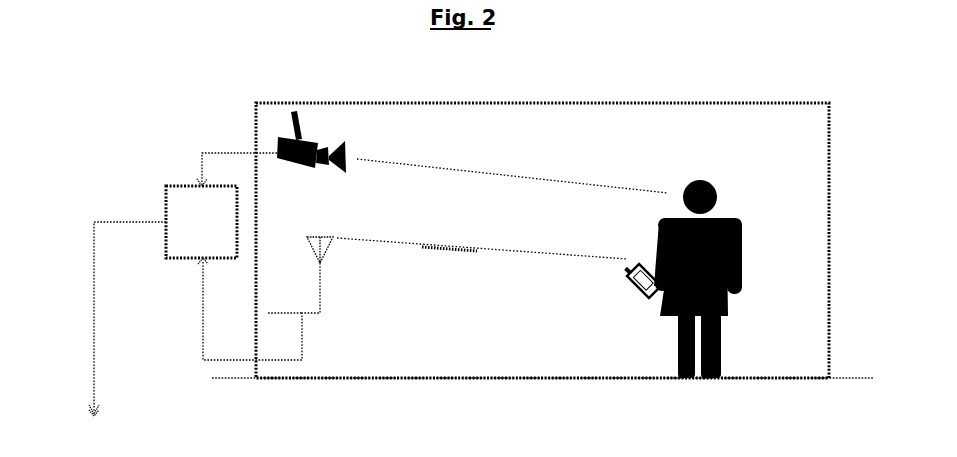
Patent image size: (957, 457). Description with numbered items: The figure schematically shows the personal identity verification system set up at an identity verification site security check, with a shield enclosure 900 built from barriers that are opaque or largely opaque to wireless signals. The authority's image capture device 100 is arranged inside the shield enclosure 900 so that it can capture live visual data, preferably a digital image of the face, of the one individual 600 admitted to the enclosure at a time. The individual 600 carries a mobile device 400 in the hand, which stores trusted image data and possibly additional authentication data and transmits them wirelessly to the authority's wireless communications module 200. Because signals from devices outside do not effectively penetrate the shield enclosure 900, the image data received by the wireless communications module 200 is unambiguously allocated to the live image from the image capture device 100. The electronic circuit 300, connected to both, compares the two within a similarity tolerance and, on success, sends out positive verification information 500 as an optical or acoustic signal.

The authority's image capture device 100 is at (272, 132).
The authority's wireless communications module 200 is at (323, 282).
The electronic circuit 300 is at (162, 200).
The individual's mobile device 400 is at (635, 295).
The positive verification information 500 is at (87, 365).
The individual 600 is at (745, 235).
The shield enclosure 900 is at (830, 215).